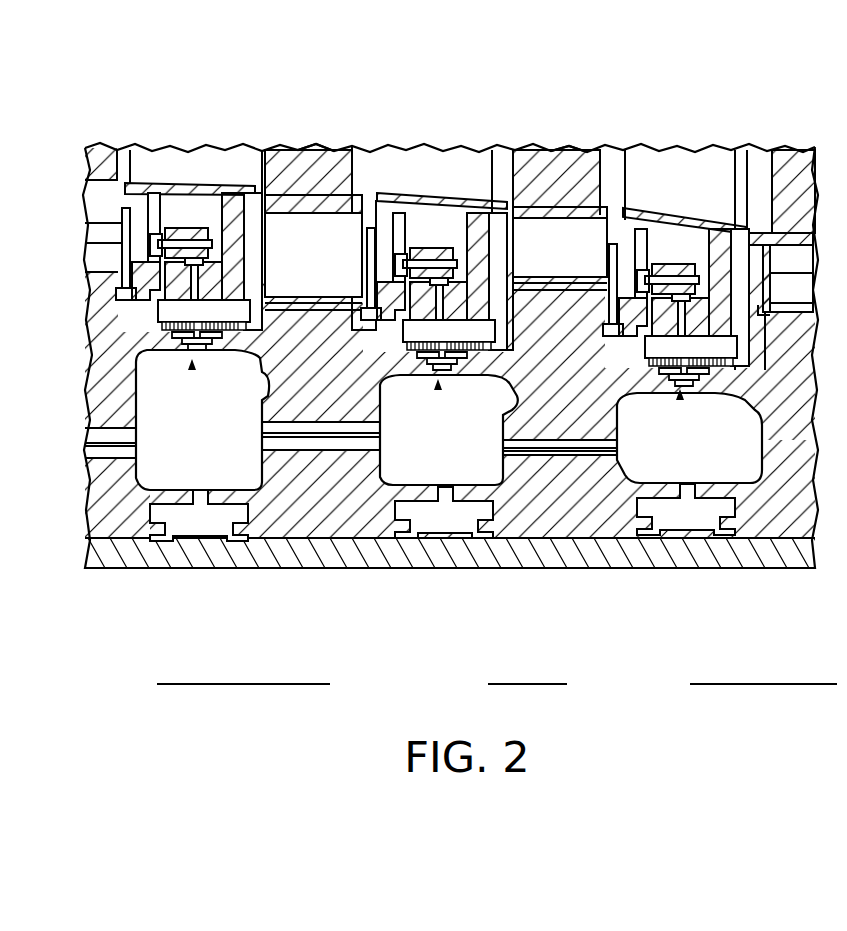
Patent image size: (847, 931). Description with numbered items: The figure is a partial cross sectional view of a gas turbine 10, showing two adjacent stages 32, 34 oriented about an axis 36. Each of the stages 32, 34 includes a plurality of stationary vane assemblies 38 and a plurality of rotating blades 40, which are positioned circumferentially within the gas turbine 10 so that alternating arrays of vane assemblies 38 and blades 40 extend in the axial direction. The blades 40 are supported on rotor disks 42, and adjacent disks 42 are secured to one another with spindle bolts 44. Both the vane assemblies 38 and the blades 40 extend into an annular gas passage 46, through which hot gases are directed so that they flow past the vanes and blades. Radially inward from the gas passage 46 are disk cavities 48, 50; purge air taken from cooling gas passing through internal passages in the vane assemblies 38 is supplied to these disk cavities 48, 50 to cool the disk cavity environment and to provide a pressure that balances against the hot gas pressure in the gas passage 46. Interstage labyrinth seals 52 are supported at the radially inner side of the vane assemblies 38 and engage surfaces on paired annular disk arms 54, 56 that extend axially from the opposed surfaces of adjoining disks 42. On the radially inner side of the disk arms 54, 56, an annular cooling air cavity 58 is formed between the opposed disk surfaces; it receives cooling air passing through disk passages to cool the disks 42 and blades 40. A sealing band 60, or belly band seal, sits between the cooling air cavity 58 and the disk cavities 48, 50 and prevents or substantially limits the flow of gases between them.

The gas turbine 10 is at (103, 122).
The stage 32 is at (252, 144).
The stage 34 is at (514, 141).
The axis 36 is at (802, 683).
The stationary vane assembly 38 is at (190, 165).
The rotating blade 40 is at (313, 141).
The rotor disk 42 is at (312, 325).
The spindle bolt 44 is at (112, 558).
The annular gas passage 46 is at (265, 198).
The disk cavity 48 is at (153, 183).
The disk cavity 50 is at (240, 216).
The labyrinth seal 52 is at (150, 334).
The annular disk arm 54 is at (150, 345).
The annular disk arm 56 is at (237, 342).
The annular cooling air cavity 58 is at (220, 466).
The sealing band 60 is at (189, 370).